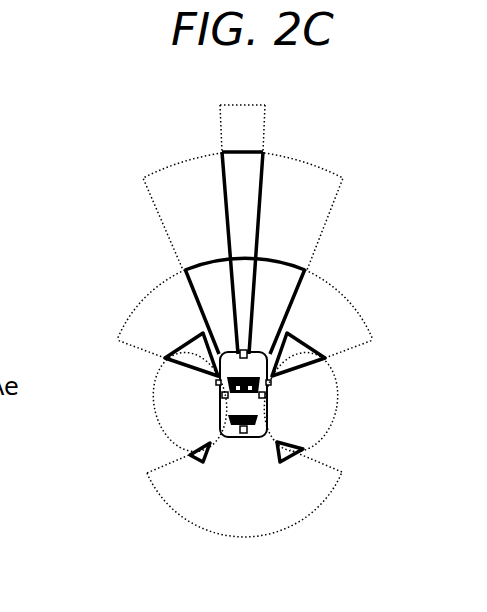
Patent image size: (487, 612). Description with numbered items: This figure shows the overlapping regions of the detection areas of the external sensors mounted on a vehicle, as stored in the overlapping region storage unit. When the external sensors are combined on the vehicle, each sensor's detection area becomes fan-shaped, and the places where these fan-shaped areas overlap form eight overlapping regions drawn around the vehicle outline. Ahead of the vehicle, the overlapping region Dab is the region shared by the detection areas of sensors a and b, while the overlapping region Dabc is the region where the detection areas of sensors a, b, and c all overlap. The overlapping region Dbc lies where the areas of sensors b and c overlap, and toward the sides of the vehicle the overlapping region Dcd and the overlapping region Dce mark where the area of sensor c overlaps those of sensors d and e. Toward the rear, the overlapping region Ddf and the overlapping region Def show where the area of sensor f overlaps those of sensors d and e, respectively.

The overlapping region Dab is at (253, 170).
The overlapping region Dabc is at (245, 262).
The overlapping region Dbc is at (196, 273).
The overlapping region Dcd is at (185, 350).
The overlapping region Dce is at (310, 345).
The overlapping region Ddf is at (207, 452).
The overlapping region Def is at (282, 446).